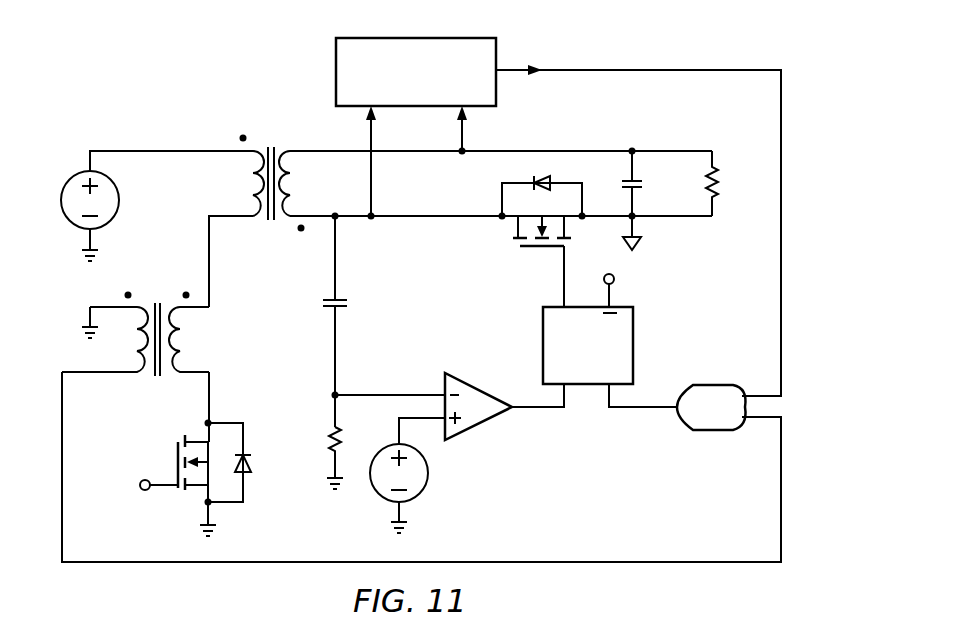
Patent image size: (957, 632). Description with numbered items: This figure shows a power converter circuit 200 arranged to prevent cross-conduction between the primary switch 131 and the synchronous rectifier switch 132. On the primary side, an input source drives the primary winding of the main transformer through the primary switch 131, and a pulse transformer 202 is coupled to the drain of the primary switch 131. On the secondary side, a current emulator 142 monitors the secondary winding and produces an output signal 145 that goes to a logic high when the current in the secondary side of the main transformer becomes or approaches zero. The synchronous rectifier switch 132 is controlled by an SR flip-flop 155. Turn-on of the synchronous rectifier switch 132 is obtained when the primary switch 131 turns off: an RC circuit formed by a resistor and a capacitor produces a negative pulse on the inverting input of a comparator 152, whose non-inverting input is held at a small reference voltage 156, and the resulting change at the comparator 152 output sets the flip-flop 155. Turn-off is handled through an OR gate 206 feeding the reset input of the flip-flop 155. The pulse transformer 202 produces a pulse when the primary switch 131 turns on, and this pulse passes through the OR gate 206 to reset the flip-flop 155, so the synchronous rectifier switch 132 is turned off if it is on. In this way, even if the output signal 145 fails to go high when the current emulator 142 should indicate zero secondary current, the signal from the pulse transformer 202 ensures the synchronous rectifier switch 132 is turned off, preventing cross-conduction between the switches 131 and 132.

The power converter circuit 200 is at (165, 70).
The current emulator 142 is at (336, 66).
The output signal 145 is at (642, 70).
The primary switch 131 is at (150, 457).
The pulse transformer 202 is at (178, 330).
The synchronous rectifier switch 132 is at (522, 265).
The comparator 152 is at (480, 387).
The SR flip-flop 155 is at (633, 343).
The reference voltage 156 is at (428, 474).
The OR gate 206 is at (703, 430).